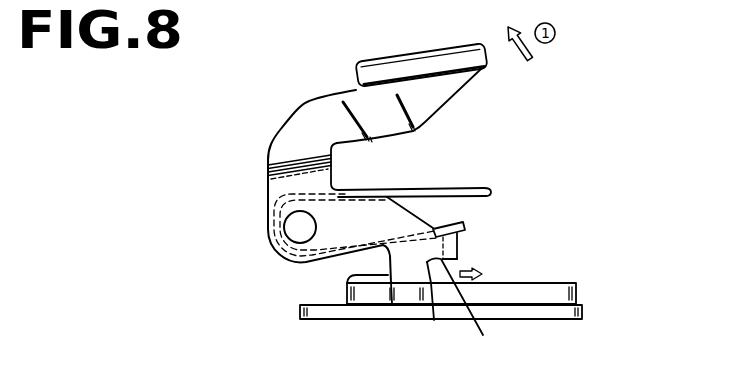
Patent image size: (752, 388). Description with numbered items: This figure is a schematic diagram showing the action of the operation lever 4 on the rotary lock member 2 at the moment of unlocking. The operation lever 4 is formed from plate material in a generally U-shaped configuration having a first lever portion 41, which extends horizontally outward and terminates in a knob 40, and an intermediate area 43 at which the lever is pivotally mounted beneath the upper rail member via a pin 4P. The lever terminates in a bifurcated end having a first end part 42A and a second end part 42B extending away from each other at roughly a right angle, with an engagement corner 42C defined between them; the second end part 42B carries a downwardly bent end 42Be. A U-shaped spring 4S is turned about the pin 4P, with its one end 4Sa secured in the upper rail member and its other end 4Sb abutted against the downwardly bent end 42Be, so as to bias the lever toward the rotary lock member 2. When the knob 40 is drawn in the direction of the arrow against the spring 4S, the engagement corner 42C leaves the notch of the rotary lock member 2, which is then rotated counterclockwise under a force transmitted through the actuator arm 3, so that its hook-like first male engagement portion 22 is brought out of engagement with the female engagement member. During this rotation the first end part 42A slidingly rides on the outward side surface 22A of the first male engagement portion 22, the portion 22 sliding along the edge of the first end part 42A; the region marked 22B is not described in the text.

The rotary lock member 2 is at (580, 279).
The actuator arm 3 is at (570, 322).
The operation lever 4 is at (273, 125).
The knob 40 is at (395, 57).
The first lever portion 41 is at (440, 98).
The intermediate area 43 is at (277, 188).
The U-shaped spring 4S is at (367, 188).
The one end of spring 4Sa is at (484, 186).
The another end of spring 4Sb is at (465, 221).
The downwardly bent end 42Be is at (467, 247).
The pin 4P is at (293, 232).
The first male engagement portion 22 is at (347, 290).
The outward side surface 22A is at (350, 277).
The rail underside 22B is at (378, 306).
The first end part 42A is at (412, 283).
The second end part 42B is at (480, 307).
The engagement corner 42C is at (434, 320).